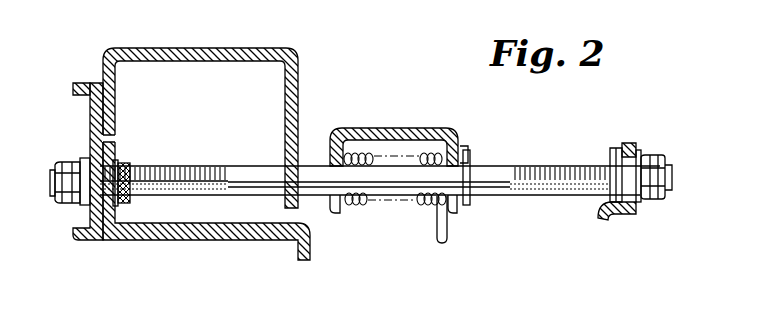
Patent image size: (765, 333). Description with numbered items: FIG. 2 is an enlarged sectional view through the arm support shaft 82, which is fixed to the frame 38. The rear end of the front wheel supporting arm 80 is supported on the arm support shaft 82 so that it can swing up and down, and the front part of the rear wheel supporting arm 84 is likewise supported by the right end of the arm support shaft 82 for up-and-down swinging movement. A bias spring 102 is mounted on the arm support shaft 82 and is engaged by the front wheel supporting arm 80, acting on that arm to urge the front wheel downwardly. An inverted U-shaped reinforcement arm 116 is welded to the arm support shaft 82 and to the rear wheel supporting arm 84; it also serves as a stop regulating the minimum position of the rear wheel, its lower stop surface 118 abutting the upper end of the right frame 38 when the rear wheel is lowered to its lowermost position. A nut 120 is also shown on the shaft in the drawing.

The frame 38 is at (214, 240).
The front wheel supporting arm 80 is at (375, 128).
The arm support shaft 82 is at (248, 168).
The rear wheel supporting arm 84 is at (88, 105).
The bias spring 102 is at (372, 205).
The reinforcement arm 116 is at (240, 47).
The stop surface 118 is at (113, 138).
The nut 120 is at (118, 160).